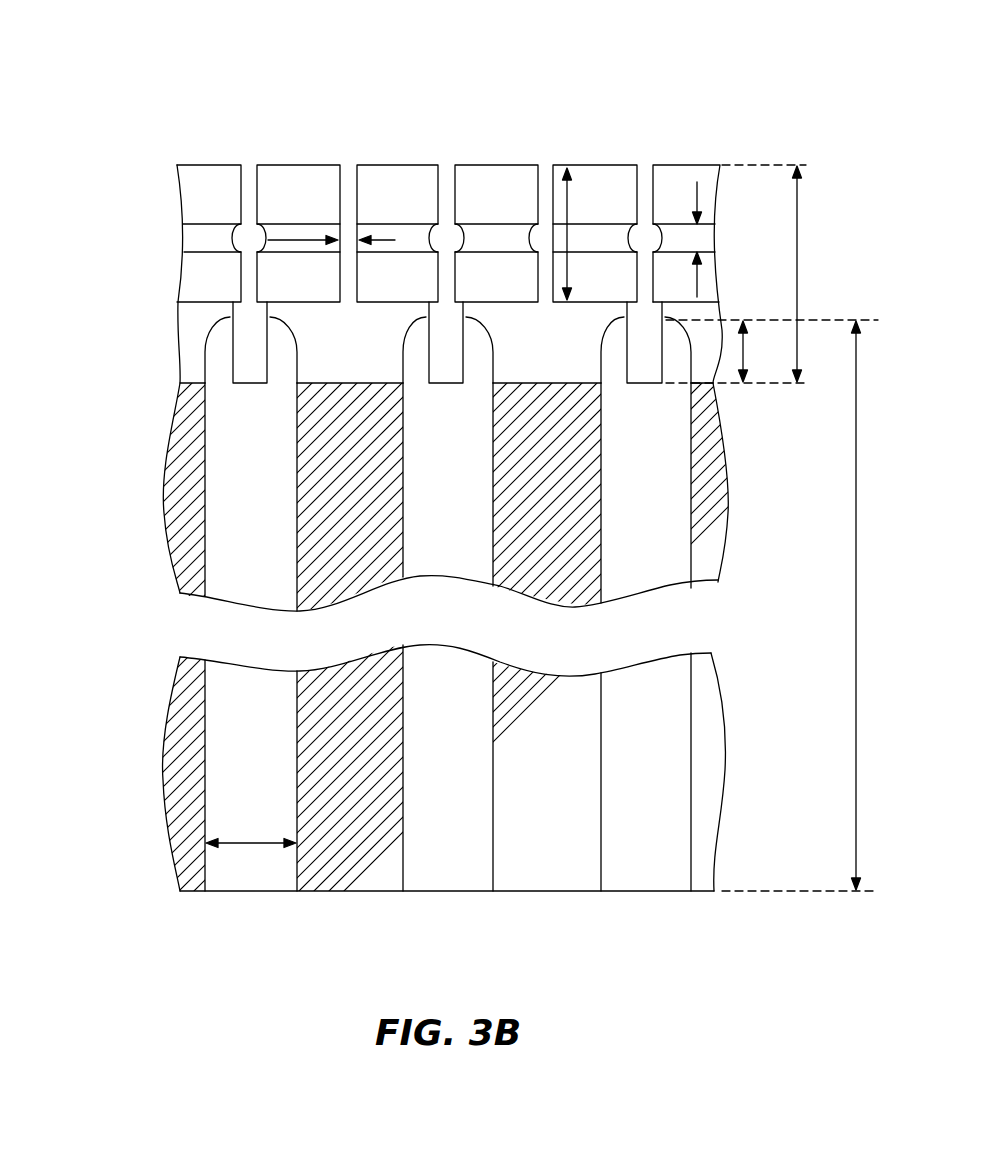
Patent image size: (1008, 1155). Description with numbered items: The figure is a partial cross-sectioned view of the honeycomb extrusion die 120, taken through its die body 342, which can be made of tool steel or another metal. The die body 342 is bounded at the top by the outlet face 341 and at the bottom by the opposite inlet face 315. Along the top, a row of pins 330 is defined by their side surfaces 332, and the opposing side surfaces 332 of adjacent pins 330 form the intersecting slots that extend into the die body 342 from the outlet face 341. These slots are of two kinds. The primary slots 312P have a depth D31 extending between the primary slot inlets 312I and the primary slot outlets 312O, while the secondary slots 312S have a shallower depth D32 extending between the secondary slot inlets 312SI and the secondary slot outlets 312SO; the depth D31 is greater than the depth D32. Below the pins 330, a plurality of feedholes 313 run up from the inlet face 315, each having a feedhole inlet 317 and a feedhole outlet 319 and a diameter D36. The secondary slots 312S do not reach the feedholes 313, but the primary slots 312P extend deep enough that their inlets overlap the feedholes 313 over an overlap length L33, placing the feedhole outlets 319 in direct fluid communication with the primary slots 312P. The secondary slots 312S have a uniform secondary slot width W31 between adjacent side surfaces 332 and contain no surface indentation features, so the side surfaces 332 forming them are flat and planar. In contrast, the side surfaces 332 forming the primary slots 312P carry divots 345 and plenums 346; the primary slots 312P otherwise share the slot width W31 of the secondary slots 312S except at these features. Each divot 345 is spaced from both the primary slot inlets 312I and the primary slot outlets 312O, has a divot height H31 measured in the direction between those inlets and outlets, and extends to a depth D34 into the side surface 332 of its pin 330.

The honeycomb extrusion die 120 is at (329, 70).
The pins 330 is at (169, 158).
The side surfaces 332 is at (192, 206).
The outlet face 341 is at (688, 160).
The divots 345 is at (221, 232).
The primary slots 312P is at (245, 156).
The primary slot outlets 312O is at (259, 155).
The secondary slots 312S is at (353, 153).
The secondary slot outlets 312SO is at (536, 151).
The secondary slot inlets 312SI is at (349, 302).
The primary slot inlets 312I is at (236, 383).
The feedhole outlets 319 is at (230, 318).
The plenums 346 is at (219, 354).
The die body 342 is at (154, 460).
The feedholes 313 is at (238, 893).
The feedhole inlets 317 is at (252, 893).
The inlet face 315 is at (389, 903).
The secondary slot width W31 is at (400, 241).
The secondary slot depth D32 is at (572, 200).
The divot height H31 is at (690, 193).
The primary slot depth D31 is at (744, 274).
The overlap length L33 is at (746, 355).
The divot depth D34 is at (800, 606).
The feedhole diameter D36 is at (248, 845).